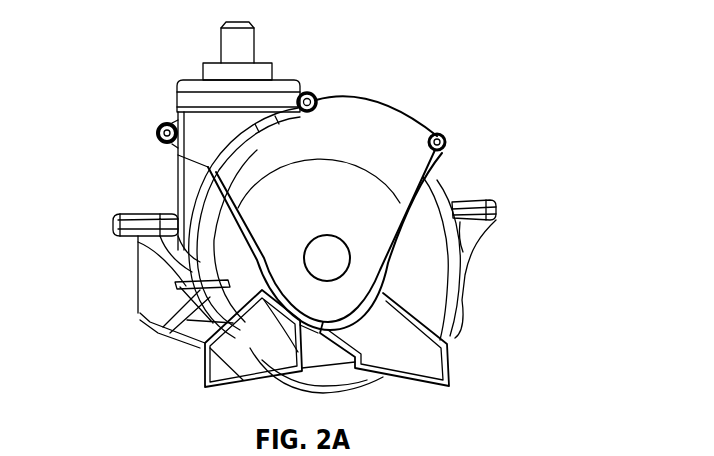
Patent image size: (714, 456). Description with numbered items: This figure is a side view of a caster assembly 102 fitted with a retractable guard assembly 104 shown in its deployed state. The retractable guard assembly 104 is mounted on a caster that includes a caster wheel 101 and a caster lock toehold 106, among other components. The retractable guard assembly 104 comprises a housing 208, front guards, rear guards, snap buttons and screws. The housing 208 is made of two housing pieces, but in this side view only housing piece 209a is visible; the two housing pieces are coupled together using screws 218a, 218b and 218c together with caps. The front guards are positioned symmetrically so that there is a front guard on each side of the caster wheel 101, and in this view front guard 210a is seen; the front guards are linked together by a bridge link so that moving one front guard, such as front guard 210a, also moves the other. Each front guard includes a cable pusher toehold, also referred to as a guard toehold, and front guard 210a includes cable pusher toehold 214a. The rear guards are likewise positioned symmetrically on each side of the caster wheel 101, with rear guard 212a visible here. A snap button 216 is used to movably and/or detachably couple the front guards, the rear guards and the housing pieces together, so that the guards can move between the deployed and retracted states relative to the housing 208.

The caster assembly 102 is at (523, 23).
The retractable guard assembly 104 is at (154, 97).
The caster lock toehold 106 is at (138, 216).
The caster wheel 101 is at (432, 193).
The housing 208 is at (367, 100).
The housing piece 209a is at (387, 117).
The front guard 210a is at (200, 374).
The rear guard 212a is at (438, 372).
The cable pusher toehold 214a is at (150, 264).
The snap button 216 is at (325, 243).
The screw 218a is at (157, 133).
The screw 218b is at (312, 95).
The screw 218c is at (447, 132).